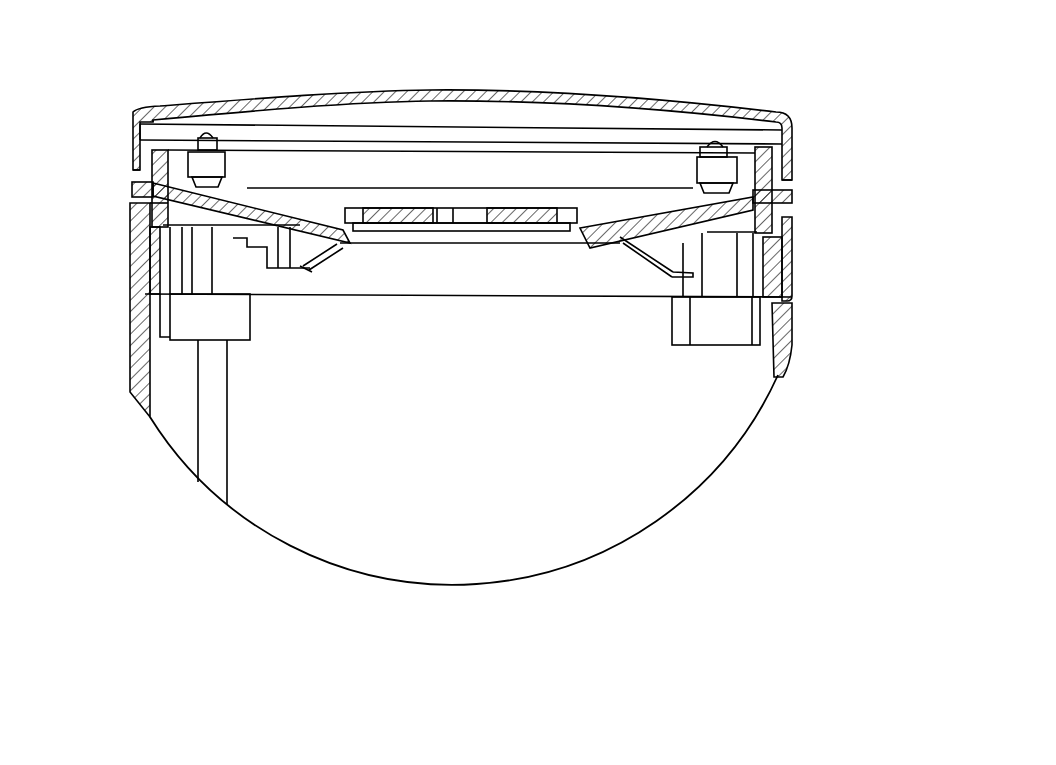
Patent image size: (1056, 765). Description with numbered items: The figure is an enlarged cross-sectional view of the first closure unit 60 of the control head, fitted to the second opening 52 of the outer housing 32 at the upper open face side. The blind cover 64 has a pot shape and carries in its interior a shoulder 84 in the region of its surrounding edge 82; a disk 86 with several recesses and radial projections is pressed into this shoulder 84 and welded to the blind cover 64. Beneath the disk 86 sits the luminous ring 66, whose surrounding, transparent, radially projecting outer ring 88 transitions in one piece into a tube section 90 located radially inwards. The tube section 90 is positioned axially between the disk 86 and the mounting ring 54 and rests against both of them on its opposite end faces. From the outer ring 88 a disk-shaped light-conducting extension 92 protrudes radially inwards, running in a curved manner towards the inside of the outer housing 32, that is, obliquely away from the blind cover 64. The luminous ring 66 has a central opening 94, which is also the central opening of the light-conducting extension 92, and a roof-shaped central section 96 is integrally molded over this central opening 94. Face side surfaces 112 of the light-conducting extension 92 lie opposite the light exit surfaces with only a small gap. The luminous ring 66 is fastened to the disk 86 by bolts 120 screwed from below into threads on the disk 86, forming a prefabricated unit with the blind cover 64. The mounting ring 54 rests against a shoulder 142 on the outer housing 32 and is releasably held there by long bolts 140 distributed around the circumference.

The first closure unit 60 is at (862, 85).
The blind cover 64 is at (707, 107).
The disk 86 is at (158, 126).
The shoulder 84 is at (792, 138).
The surrounding edge 82 is at (793, 162).
The luminous ring 66 is at (783, 207).
The outer ring 88 is at (133, 187).
The tube section 90 is at (153, 223).
The mounting ring 54 is at (150, 277).
The shoulder 142 is at (790, 303).
The outer housing 32 is at (793, 307).
The second opening 52 is at (740, 370).
The light-conducting extension 92 is at (283, 213).
The face side surfaces 112 is at (357, 240).
The bolts 120 is at (205, 130).
The central opening 94 is at (485, 240).
The roof-shaped central section 96 is at (517, 210).
The long bolts 140 is at (210, 453).